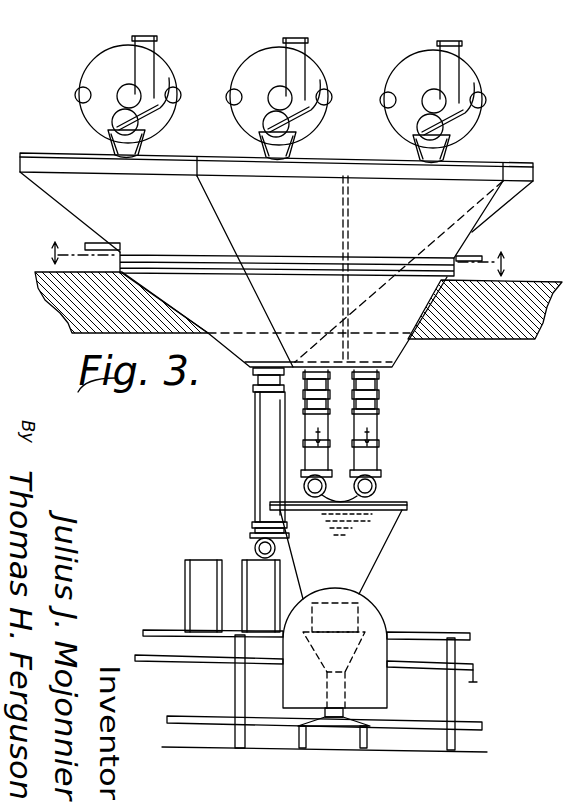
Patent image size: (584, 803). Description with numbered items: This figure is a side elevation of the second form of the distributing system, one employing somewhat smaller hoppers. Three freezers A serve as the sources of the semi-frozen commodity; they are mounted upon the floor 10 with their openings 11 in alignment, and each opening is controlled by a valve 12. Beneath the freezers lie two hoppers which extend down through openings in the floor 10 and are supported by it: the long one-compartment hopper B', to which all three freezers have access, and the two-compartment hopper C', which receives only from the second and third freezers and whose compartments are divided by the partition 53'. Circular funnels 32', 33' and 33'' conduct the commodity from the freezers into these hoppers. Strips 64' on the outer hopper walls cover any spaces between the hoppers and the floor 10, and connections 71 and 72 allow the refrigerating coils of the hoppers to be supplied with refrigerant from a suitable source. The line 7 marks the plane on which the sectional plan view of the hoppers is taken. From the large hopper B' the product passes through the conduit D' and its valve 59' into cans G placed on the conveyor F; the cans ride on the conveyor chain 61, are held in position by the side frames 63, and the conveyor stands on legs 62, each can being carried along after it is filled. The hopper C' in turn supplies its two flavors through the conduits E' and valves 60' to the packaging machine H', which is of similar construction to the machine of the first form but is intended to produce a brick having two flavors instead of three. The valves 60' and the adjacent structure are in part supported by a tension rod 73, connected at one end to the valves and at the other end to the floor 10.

The freezers A is at (164, 66).
The valve 12 is at (169, 78).
The openings 11 is at (121, 122).
The funnel 32' is at (147, 144).
The funnel 33' is at (302, 146).
The funnel 33'' is at (409, 149).
The long hopper B' is at (292, 181).
The hopper C' is at (261, 250).
The partition 53' is at (323, 269).
The strips 64' is at (287, 251).
The connection 71 is at (92, 245).
The connection 72 is at (478, 257).
The section line 7— 7 is at (276, 259).
The floor 10 is at (540, 282).
The conduit D' is at (245, 445).
The valve 59' is at (253, 535).
The conduits E' is at (360, 423).
The tension rod 73 is at (369, 435).
The valves 60' is at (359, 486).
The packaging machine H' is at (348, 614).
The cans G is at (219, 569).
The conveyor F is at (421, 632).
The side frames 63 is at (470, 636).
The conveyor chain 61 is at (474, 672).
The legs 62 is at (236, 733).